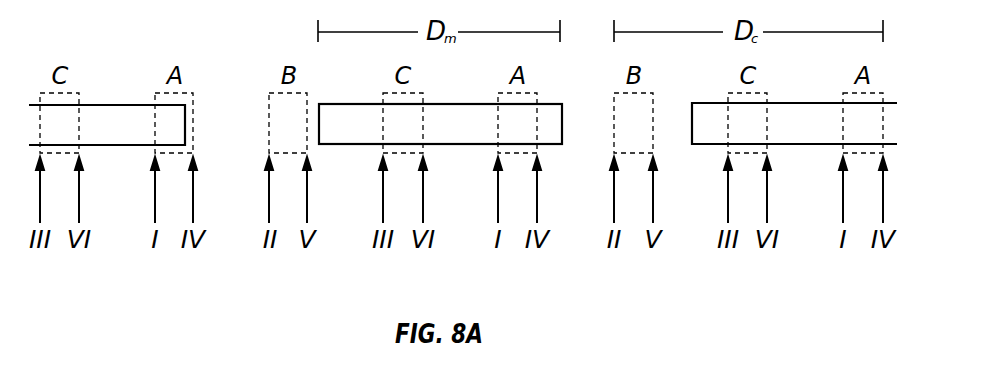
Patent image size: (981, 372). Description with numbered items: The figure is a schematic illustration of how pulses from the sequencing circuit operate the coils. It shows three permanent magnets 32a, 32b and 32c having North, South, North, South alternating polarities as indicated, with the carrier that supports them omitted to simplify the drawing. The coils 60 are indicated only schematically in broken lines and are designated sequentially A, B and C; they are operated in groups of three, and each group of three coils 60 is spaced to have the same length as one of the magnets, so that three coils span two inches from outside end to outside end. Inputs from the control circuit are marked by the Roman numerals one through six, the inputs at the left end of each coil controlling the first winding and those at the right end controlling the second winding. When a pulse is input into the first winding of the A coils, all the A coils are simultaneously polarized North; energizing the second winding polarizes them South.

The magnet 32a is at (122, 145).
The magnet 32b is at (472, 144).
The magnet 32c is at (813, 144).
The coil 60 is at (268, 99).